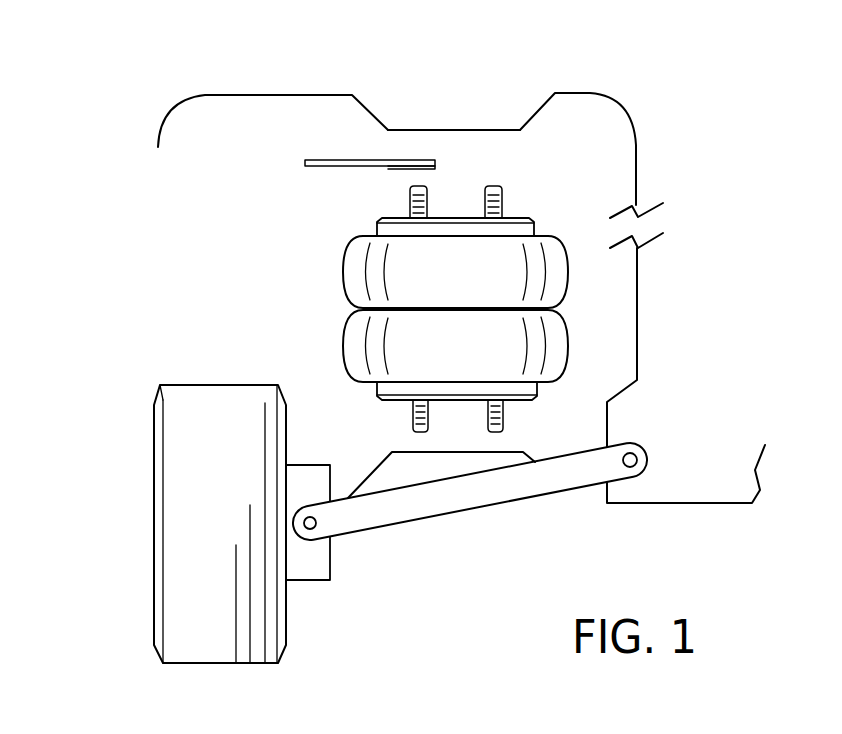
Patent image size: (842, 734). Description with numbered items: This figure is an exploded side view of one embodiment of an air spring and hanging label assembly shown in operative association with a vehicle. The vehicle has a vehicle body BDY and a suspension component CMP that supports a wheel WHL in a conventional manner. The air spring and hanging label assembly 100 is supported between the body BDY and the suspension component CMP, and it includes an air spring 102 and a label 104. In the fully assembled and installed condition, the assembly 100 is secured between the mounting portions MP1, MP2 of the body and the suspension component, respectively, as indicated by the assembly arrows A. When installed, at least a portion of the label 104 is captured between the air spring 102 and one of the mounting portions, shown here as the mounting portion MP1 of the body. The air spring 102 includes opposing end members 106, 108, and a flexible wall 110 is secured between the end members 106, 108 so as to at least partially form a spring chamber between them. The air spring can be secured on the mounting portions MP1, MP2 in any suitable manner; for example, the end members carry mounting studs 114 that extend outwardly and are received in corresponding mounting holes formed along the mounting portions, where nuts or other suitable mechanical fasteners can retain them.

The air spring and hanging label assembly 100 is at (192, 222).
The air spring 102 is at (376, 312).
The label 104 is at (295, 173).
The end member 106 is at (377, 224).
The end member 108 is at (378, 388).
The flexible wall 110 is at (343, 290).
The mounting studs 114 is at (412, 415).
The assembly arrows A is at (454, 105).
The vehicle body BDY is at (612, 92).
The mounting portion MP1 is at (397, 122).
The mounting portion MP2 is at (423, 462).
The suspension component CMP is at (539, 505).
The wheel WHL is at (185, 497).